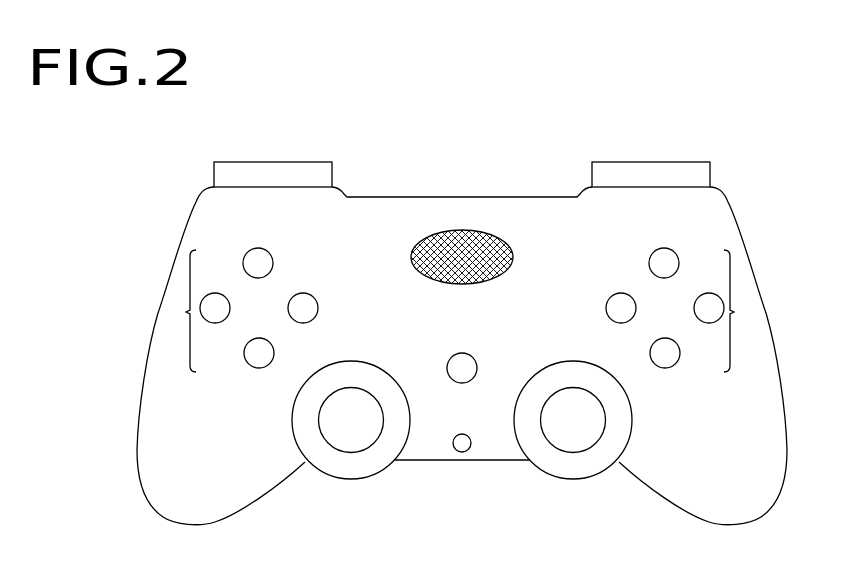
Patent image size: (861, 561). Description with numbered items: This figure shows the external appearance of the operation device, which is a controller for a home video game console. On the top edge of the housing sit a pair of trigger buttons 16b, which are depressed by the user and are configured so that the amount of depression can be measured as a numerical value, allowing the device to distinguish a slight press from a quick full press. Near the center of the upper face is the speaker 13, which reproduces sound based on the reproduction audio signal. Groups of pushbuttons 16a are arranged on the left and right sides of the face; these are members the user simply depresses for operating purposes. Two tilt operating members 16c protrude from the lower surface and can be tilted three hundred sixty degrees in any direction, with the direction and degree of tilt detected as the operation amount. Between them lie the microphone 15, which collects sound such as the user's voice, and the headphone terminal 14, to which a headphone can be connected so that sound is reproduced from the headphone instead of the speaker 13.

The speaker 13 is at (460, 230).
The headphone terminal 14 is at (455, 451).
The microphone 15 is at (475, 380).
The pushbuttons 16a is at (186, 312).
The trigger buttons 16b is at (270, 162).
The tilt operating members 16c is at (350, 452).